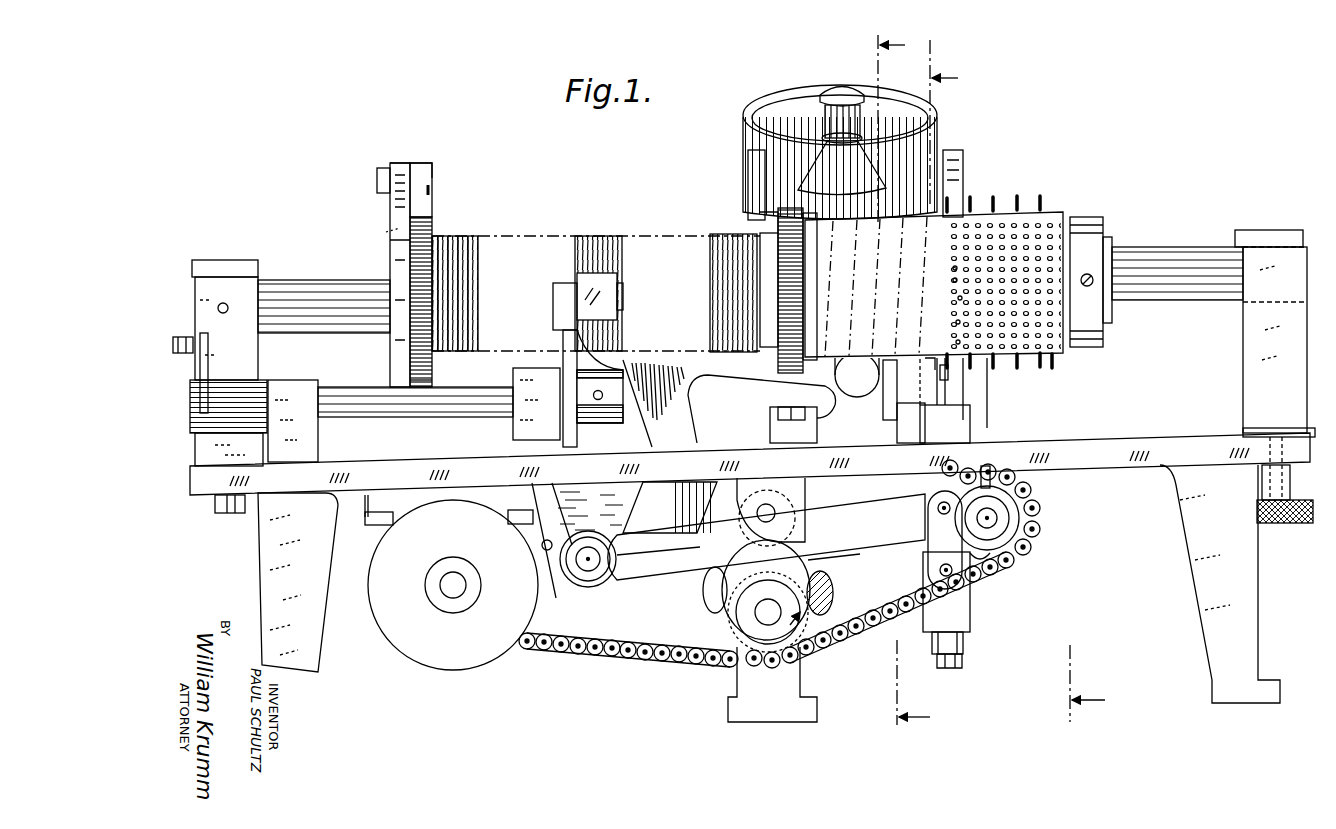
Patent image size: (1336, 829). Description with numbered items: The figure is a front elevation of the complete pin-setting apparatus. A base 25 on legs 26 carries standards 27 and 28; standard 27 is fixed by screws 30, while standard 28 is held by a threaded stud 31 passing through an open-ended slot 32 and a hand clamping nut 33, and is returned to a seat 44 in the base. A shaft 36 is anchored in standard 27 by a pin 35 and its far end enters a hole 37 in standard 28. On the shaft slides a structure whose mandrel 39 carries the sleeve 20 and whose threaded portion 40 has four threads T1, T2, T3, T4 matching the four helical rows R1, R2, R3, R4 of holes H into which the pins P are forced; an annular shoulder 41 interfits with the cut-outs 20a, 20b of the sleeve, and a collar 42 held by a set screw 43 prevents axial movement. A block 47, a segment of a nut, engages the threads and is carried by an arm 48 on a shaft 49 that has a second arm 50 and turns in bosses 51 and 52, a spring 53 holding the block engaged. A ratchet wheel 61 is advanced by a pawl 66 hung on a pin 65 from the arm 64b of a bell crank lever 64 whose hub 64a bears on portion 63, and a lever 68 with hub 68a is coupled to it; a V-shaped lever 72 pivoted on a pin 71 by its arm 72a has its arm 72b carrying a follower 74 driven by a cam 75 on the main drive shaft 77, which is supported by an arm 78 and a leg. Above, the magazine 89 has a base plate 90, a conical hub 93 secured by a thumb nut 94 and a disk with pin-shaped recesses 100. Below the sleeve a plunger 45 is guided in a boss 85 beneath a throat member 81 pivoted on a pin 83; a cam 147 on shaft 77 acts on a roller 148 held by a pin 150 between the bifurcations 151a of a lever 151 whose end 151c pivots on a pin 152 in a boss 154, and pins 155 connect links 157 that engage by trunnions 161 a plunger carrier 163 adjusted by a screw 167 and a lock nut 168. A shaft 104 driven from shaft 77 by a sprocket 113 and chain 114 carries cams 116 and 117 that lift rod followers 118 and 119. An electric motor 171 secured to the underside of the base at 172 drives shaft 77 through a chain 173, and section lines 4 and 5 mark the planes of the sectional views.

The sleeve 20 is at (978, 277).
The cut-out 20a is at (817, 303).
The cut-out 20b is at (1068, 222).
The base 25 is at (1193, 440).
The legs 26 is at (255, 572).
The standard 27 is at (200, 278).
The standard 28 is at (1243, 355).
The screws 30 is at (232, 514).
The threaded stud 31 is at (1302, 472).
The open-ended slot 32 is at (1245, 470).
The hand-operated clamping nut 33 is at (1293, 488).
The pin 35 is at (222, 314).
The shaft 36 is at (298, 288).
The hole 37 is at (1265, 237).
The mandrel 39 is at (1110, 240).
The threaded portion 40 is at (596, 265).
The annular shoulder 41 is at (804, 325).
The collar 42 is at (1105, 222).
The set screw 43 is at (1095, 281).
The seat 44 is at (1298, 428).
The plunger 45 is at (936, 367).
The block 47 is at (624, 292).
The arm 48 is at (563, 330).
The shaft 49 is at (428, 417).
The arm 50 is at (209, 358).
The boss 51 is at (297, 382).
The boss 52 is at (516, 433).
The spring 53 is at (184, 354).
The ratchet wheel 61 is at (432, 377).
The bearing portion 63 is at (386, 236).
The bell crank lever 64 is at (410, 257).
The hub 64a is at (395, 250).
The upwardly directed arm 64b is at (392, 205).
The pin 65 is at (437, 165).
The pawl 66 is at (432, 180).
The lever 68 is at (786, 208).
The hub 68a is at (785, 242).
The horizontal pin 71 is at (860, 382).
The V-shaped lever 72 is at (706, 379).
The arm 72a is at (811, 425).
The arm 72b is at (685, 512).
The cam follower 74 is at (705, 587).
The cam 75 is at (832, 598).
The main drive shaft 77 is at (768, 612).
The arm 78 is at (808, 487).
The throat element 81 is at (948, 378).
The pin 83 is at (917, 428).
The boss 85 is at (933, 444).
The magazine 89 is at (836, 160).
The base plate 90 is at (965, 158).
The conically shaped hub 93 is at (822, 167).
The thumb nut 94 is at (825, 92).
The apertures 100 is at (886, 145).
The shaft 104 is at (998, 516).
The sprocket 113 is at (1019, 538).
The chain 114 is at (978, 588).
The cam 116 is at (1010, 527).
The cam 117 is at (1015, 480).
The cam follower 118 is at (988, 407).
The cam follower 119 is at (988, 425).
The cam 147 is at (803, 567).
The cam follower roller 148 is at (773, 537).
The pin 150 is at (776, 513).
The lever 151 is at (766, 537).
The bifurcation 151a is at (839, 571).
The left-hand end 151c is at (650, 583).
The pin 152 is at (586, 578).
The boss 154 is at (582, 589).
The pin 155 is at (938, 509).
The link 157 is at (927, 566).
The trunnion 161 is at (946, 577).
The plunger carrier 163 is at (970, 625).
The screw 167 is at (952, 668).
The lock nut 168 is at (963, 647).
The electric motor 171 is at (453, 585).
The motor mounting 172 is at (370, 527).
The drive chain 173 is at (587, 658).
The section line 4 is at (911, 381).
The section line 5 is at (1026, 381).
The thread T1 is at (438, 236).
The thread T2 is at (448, 236).
The thread T3 is at (458, 236).
The thread T4 is at (468, 236).
The pins P is at (1062, 368).
The helical row R1 is at (941, 266).
The helical row R2 is at (941, 278).
The helical row R3 is at (943, 324).
The helical row R4 is at (943, 344).
The holes H is at (958, 300).